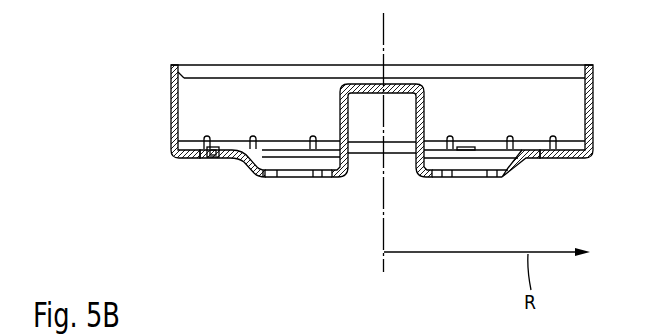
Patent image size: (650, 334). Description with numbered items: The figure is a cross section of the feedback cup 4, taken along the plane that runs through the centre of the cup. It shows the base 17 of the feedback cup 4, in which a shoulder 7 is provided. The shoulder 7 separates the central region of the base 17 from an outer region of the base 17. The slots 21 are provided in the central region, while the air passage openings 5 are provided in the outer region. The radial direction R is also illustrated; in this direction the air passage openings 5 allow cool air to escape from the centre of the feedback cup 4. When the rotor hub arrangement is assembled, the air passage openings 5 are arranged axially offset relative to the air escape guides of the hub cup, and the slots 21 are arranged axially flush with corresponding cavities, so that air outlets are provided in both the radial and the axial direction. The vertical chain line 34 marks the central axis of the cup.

The feedback cup 4 is at (176, 100).
The air passage opening 5 is at (556, 156).
The shoulder 7 is at (243, 164).
The base 17 is at (330, 177).
The slot 21 is at (297, 177).
The axis of rotation 34 is at (384, 33).